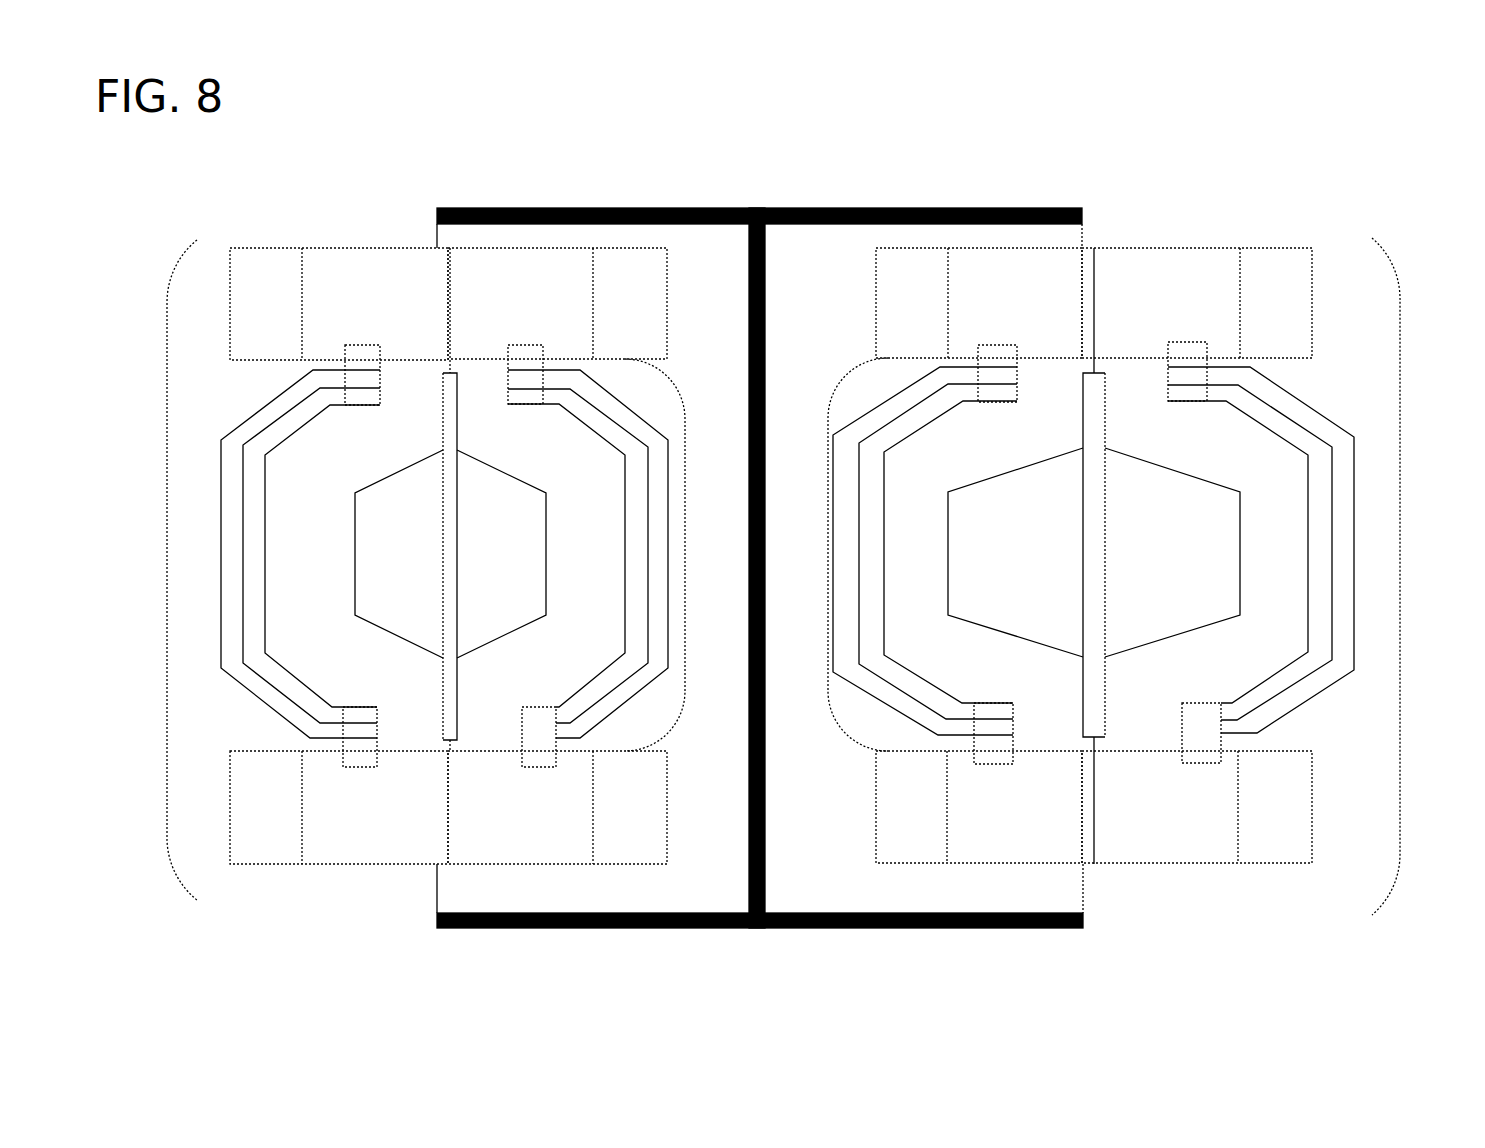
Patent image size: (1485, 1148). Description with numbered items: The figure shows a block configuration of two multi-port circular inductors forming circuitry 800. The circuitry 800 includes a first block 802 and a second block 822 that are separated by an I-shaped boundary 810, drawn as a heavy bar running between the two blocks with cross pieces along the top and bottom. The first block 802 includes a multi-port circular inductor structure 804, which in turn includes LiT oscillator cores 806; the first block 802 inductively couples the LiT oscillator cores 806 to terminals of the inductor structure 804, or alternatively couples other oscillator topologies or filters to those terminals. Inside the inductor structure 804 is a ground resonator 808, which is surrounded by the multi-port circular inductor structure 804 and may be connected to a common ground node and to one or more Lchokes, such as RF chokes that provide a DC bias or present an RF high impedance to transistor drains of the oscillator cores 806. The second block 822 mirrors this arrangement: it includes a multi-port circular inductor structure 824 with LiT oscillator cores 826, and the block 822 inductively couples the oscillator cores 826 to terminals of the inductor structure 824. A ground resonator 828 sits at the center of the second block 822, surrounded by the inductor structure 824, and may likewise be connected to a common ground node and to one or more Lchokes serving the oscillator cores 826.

The circuitry 800 is at (1247, 158).
The first block 802 is at (167, 571).
The multi-port circular inductor structure 804 is at (684, 553).
The LiT oscillator cores 806 is at (362, 248).
The ground resonator 808 is at (452, 556).
The I-shaped boundary 810 is at (686, 208).
The second block 822 is at (1400, 575).
The multi-port circular inductor structure 824 is at (830, 560).
The LiT oscillator cores 826 is at (1195, 248).
The ground resonator 828 is at (1092, 556).